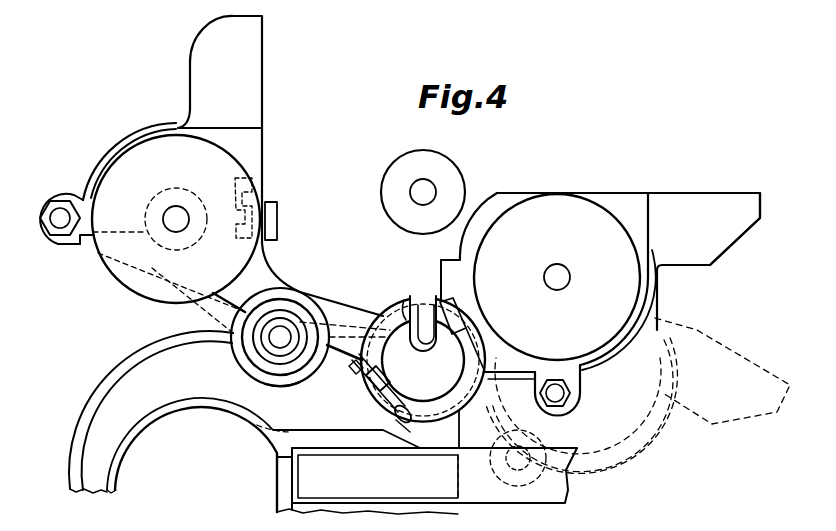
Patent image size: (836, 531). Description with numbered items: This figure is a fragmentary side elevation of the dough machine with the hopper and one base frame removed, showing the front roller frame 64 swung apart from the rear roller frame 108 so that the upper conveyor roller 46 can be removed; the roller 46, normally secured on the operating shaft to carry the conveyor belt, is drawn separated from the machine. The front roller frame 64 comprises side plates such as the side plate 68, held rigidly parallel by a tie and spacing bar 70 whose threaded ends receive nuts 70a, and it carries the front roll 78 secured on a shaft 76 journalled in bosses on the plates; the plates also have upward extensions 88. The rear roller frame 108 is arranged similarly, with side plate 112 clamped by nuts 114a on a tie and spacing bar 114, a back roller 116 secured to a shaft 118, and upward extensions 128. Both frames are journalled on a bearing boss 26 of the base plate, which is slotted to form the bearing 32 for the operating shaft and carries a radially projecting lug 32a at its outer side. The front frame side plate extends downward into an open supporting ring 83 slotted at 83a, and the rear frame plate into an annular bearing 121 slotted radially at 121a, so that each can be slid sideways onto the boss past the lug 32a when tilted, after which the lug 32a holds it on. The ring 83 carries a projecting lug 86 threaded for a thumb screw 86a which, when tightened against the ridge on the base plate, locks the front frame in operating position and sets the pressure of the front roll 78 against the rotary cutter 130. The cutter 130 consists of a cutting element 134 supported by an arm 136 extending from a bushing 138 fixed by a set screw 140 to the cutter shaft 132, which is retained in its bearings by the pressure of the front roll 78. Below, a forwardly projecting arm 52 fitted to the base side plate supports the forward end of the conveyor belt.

The upward extensions 128 is at (250, 60).
The side plate 112 is at (240, 148).
The back roller 116 is at (220, 168).
The shaft 118 is at (170, 226).
The tie and spacing bar 114 is at (60, 212).
The nuts 114a is at (47, 225).
The rear roller frame 108 is at (279, 256).
The shaft 132 is at (281, 332).
The arm 136 is at (284, 324).
The cutting element 134 is at (231, 330).
The bushing 138 is at (270, 356).
The set screw 140 is at (262, 422).
The rotary cutter 130 is at (294, 378).
The bearing boss 26 is at (448, 373).
The annular bearing 121 is at (400, 318).
The slot 121a is at (425, 304).
The open supporting ring 83 is at (392, 394).
The slot 83a is at (425, 324).
The projecting lug 86 is at (369, 375).
The thumb screw 86a is at (408, 416).
The bearing 32 is at (480, 332).
The radially projecting lug 32a is at (462, 295).
The roller 46 is at (434, 178).
The front roll 78 is at (537, 212).
The shaft 76 is at (570, 275).
The front roller frame 64 is at (611, 196).
The side plate 68 is at (632, 205).
The upward extensions 88 is at (697, 207).
The tie and spacing bar 70 is at (565, 393).
The nuts 70a is at (575, 402).
The arm 52 is at (480, 490).